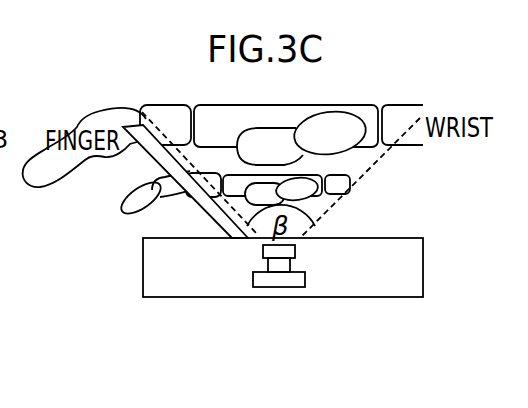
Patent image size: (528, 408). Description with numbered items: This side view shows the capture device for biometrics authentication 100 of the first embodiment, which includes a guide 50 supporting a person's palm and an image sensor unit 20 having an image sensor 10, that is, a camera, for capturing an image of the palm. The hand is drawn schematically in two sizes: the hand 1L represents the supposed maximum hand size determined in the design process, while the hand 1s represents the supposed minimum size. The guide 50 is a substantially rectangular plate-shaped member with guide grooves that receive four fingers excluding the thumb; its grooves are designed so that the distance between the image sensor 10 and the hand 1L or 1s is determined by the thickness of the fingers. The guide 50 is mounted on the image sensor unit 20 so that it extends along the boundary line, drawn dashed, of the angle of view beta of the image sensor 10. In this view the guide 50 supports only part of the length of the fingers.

The person's hand (maximum size) 1L is at (355, 93).
The person's hand (minimum size) 1s is at (345, 201).
The guide 50 is at (147, 157).
The image sensor unit 20 is at (423, 277).
The image sensor 10 is at (277, 287).
The capture device for biometrics authentication 100 is at (433, 228).